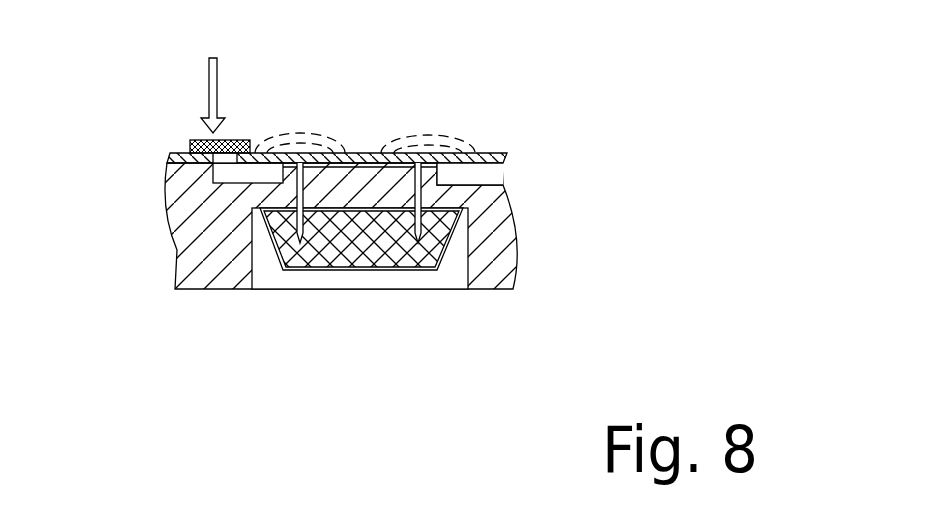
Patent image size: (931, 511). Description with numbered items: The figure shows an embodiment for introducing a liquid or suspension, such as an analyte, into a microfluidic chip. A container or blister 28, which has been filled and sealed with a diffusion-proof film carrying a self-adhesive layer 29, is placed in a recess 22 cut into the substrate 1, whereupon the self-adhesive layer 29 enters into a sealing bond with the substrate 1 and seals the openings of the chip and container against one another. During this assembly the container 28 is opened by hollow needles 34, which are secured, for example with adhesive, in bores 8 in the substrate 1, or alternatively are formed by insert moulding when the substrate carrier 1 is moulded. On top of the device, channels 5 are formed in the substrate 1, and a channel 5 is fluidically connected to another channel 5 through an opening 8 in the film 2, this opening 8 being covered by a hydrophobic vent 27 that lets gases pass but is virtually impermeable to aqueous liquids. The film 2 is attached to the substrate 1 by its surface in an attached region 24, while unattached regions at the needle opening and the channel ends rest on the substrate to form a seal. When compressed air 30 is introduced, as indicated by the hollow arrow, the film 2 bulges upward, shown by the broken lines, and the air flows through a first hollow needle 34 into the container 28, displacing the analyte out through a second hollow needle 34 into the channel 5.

The substrate 1 is at (497, 275).
The film 2 is at (503, 158).
The channel 5 is at (240, 172).
The bore/throughflow opening 8 is at (205, 150).
The recess/cut-out 22 is at (270, 277).
The attached region 24 is at (180, 160).
The hydrophobic vent 27 is at (222, 138).
The container/blister 28 is at (402, 260).
The self-adhesive layer 29 is at (467, 210).
The compressed air 30 is at (212, 83).
The needle 34 is at (302, 165).